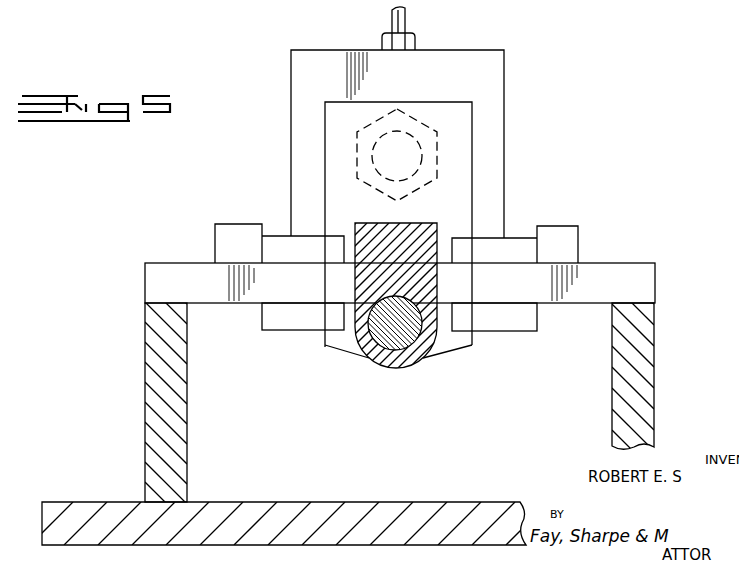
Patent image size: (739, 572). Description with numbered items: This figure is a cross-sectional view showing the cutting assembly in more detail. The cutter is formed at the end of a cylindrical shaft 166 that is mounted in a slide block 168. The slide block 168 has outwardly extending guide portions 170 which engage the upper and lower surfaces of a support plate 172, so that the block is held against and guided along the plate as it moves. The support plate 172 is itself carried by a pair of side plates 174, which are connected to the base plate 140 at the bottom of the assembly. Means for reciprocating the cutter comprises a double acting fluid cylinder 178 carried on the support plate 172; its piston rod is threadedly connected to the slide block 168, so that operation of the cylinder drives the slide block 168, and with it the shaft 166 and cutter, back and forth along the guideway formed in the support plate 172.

The base plate 140 is at (113, 501).
The cylindrical shaft 166 is at (408, 350).
The slide block 168 is at (472, 185).
The guide portions 170 is at (280, 236).
The support plate 172 is at (655, 296).
The side plates 174 is at (145, 368).
The double acting fluid cylinder 178 is at (504, 94).